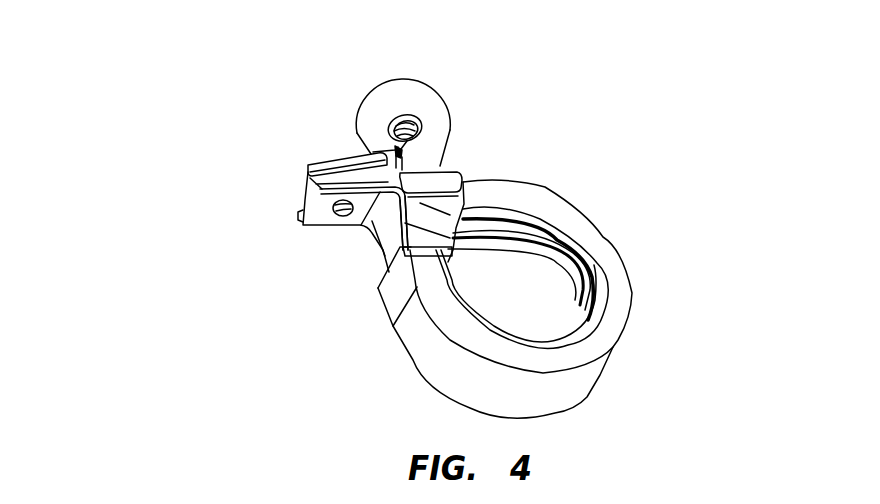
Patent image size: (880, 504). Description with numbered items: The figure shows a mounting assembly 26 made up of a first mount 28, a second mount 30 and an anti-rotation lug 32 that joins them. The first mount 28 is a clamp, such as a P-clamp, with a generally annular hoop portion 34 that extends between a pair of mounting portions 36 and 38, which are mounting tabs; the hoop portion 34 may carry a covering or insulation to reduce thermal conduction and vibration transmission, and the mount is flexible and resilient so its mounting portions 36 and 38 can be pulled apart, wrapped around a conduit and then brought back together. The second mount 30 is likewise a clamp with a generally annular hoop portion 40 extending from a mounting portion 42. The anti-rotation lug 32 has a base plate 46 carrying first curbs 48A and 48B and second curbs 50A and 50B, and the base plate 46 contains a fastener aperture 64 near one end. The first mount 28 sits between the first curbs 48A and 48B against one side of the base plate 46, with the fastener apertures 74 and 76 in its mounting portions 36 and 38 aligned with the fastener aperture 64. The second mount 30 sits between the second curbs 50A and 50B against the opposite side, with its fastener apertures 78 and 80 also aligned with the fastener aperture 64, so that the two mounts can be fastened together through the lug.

The mounting assembly 26 is at (596, 160).
The first mount 28 is at (642, 303).
The second mount 30 is at (446, 94).
The anti-rotation lug 32 is at (293, 197).
The hoop portion 34 is at (612, 239).
The mounting portion 36 is at (460, 208).
The mounting portion 38 is at (356, 222).
The hoop portion 40 is at (398, 98).
The mounting portion 42 is at (388, 150).
The base plate 46 is at (307, 183).
The first curb 48A is at (418, 236).
The first curb 48B is at (457, 176).
The second curb 50A is at (298, 217).
The second curb 50B is at (310, 162).
The fastener aperture 64 is at (340, 221).
The fastener aperture 74 is at (343, 208).
The fastener aperture 76 is at (343, 208).
The fastener aperture 78 is at (343, 208).
The fastener aperture 80 is at (343, 208).